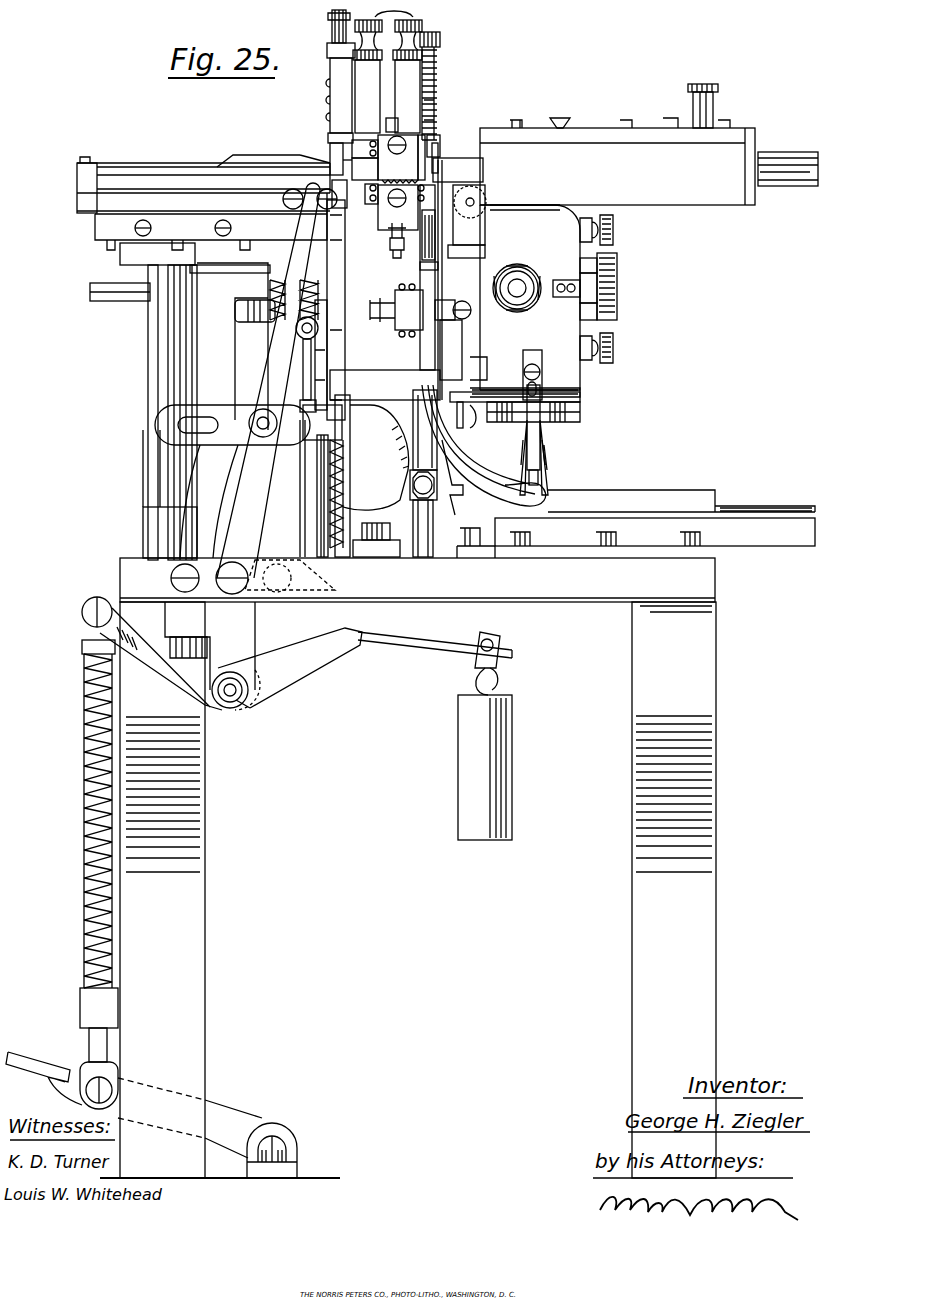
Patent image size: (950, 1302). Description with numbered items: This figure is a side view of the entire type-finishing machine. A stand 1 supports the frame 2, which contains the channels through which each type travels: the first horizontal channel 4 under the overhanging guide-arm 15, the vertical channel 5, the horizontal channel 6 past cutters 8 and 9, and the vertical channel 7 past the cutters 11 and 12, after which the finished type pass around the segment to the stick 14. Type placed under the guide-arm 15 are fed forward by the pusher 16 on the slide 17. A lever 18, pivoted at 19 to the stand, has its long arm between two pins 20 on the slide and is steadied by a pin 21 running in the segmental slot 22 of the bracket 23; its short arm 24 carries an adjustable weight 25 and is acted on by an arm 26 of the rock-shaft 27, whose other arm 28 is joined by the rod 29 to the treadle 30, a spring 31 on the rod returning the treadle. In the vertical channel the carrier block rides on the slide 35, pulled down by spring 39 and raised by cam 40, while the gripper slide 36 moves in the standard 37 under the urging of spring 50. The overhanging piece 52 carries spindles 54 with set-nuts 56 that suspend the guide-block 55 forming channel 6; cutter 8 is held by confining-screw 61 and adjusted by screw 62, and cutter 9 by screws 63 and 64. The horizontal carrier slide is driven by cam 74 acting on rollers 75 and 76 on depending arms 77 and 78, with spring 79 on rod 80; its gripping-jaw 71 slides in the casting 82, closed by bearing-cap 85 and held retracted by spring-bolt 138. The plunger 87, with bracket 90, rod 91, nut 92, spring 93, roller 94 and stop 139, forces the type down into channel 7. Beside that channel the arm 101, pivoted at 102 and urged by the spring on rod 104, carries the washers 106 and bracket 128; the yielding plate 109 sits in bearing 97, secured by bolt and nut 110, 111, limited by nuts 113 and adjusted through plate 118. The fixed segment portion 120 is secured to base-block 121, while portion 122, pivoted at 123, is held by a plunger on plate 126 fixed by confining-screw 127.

The stand 1 is at (417, 580).
The frame 2 is at (385, 385).
The first horizontal channel 4 is at (282, 172).
The vertical channel 5 is at (213, 178).
The horizontal channel 6 is at (348, 190).
The vertical channel 7 is at (431, 277).
The cutter 8 is at (398, 159).
The cutter 9 is at (388, 194).
The cutter 11 is at (397, 310).
The cutter 12 is at (447, 304).
The stick 14 is at (681, 501).
The overhanging guide-arm 15 is at (245, 165).
The pusher 16 is at (203, 157).
The slide 17 is at (203, 201).
The lever 18 is at (268, 380).
The pivot 19 is at (232, 592).
The pins 20 is at (326, 206).
The pin 21 is at (263, 431).
The segmental slot 22 is at (226, 418).
The bracket 23 is at (190, 494).
The short arm 24 is at (409, 644).
The adjustable weight 25 is at (485, 767).
The arm 26 is at (290, 668).
The rock-shaft 27 is at (242, 697).
The arm 28 is at (152, 653).
The rod 29 is at (84, 796).
The treadle 30 is at (151, 1108).
The spring 31 is at (112, 700).
The slide 35 is at (327, 360).
The slide 36 is at (304, 358).
The standard 37 is at (340, 100).
The spring 39 is at (346, 494).
The cam 40 is at (376, 457).
The spring 50 is at (330, 55).
The overhanging piece 52 is at (365, 149).
The spindles 54 is at (394, 10).
The guide-block 55 is at (387, 91).
The set-nuts 56 is at (388, 35).
The confining-screw 61 is at (400, 150).
The screw 62 is at (389, 118).
The screw 63 is at (399, 205).
The screw 64 is at (390, 246).
The gripping-jaw 71 is at (458, 170).
The cam 74 is at (376, 525).
The roller 75 is at (300, 403).
The roller 76 is at (472, 428).
The arm 77 is at (179, 411).
The arm 78 is at (547, 432).
The spring 79 is at (276, 304).
The rod 80 is at (237, 261).
The casting 82 is at (617, 161).
The bearing-cap 85 is at (788, 161).
The plunger 87 is at (440, 140).
The bracket 90 is at (440, 150).
The rod 91 is at (438, 72).
The nut 92 is at (440, 38).
The spring 93 is at (442, 105).
The roller 94 is at (431, 473).
The bearing 97 is at (525, 301).
The arm 101 is at (469, 215).
The pivot 102 is at (492, 369).
The rod 104 is at (474, 206).
The washers 106 is at (466, 251).
The plate 109 is at (450, 280).
The bolt 110 is at (517, 288).
The nut 111 is at (519, 268).
The nuts 113 is at (613, 229).
The plate 118 is at (580, 264).
The fixed portion of segment 120 is at (464, 477).
The base-block 121 is at (636, 538).
The pivoted portion of segment 122 is at (484, 445).
The pivot 123 is at (450, 374).
The plate 126 is at (537, 394).
The confining-screw 127 is at (540, 372).
The adjustable bracket 128 is at (469, 301).
The spring-bolt 138 is at (714, 106).
The adjustable stop 139 is at (515, 406).